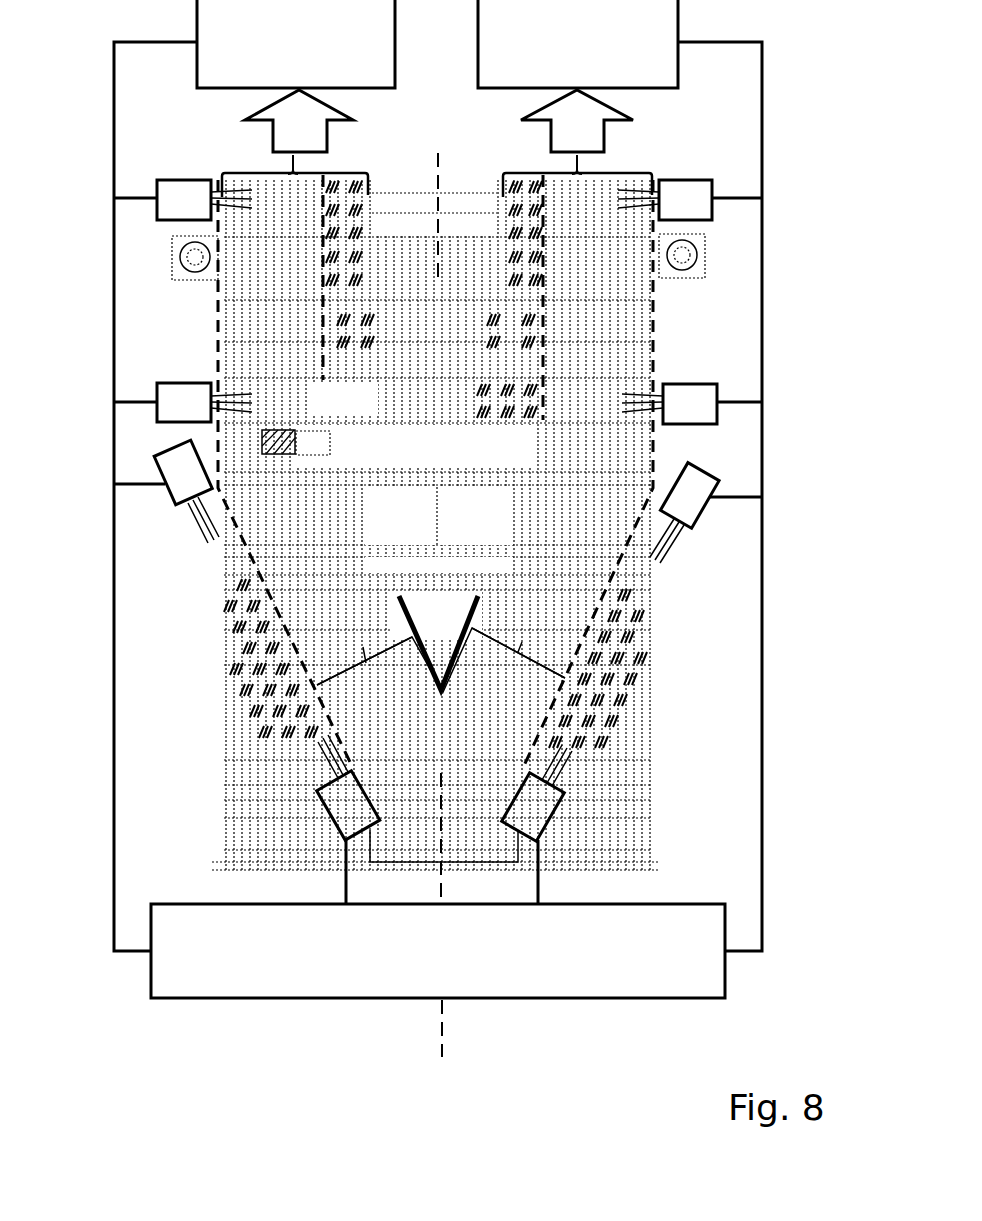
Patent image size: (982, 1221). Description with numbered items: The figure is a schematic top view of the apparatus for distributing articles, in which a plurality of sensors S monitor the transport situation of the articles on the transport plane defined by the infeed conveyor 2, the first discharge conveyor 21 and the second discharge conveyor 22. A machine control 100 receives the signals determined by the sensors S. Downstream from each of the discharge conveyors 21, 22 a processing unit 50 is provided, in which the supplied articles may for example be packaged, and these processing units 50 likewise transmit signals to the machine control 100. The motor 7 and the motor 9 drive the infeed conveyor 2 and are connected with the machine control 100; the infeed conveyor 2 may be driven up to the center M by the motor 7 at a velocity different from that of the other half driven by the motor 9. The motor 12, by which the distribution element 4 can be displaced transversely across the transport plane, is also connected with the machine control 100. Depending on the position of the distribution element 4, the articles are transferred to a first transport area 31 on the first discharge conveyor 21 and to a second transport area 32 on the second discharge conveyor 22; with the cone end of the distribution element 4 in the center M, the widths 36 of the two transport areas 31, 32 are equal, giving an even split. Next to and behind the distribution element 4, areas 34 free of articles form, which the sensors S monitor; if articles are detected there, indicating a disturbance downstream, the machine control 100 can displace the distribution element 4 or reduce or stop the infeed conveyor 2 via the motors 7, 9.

The infeed conveyor 2 is at (485, 864).
The distribution element 4 is at (468, 465).
The motor 7 is at (190, 252).
The motor 9 is at (688, 252).
The motor 12 is at (326, 436).
The first discharge conveyor 21 is at (252, 172).
The second discharge conveyor 22 is at (618, 172).
The first transport area 31 is at (308, 531).
The second transport area 32 is at (571, 595).
The areas free of articles 34 is at (347, 288).
The widths 36 is at (547, 665).
The processing unit 50 is at (316, 61).
The machine control 100 is at (360, 972).
The center M is at (497, 1058).
The sensors S is at (547, 828).